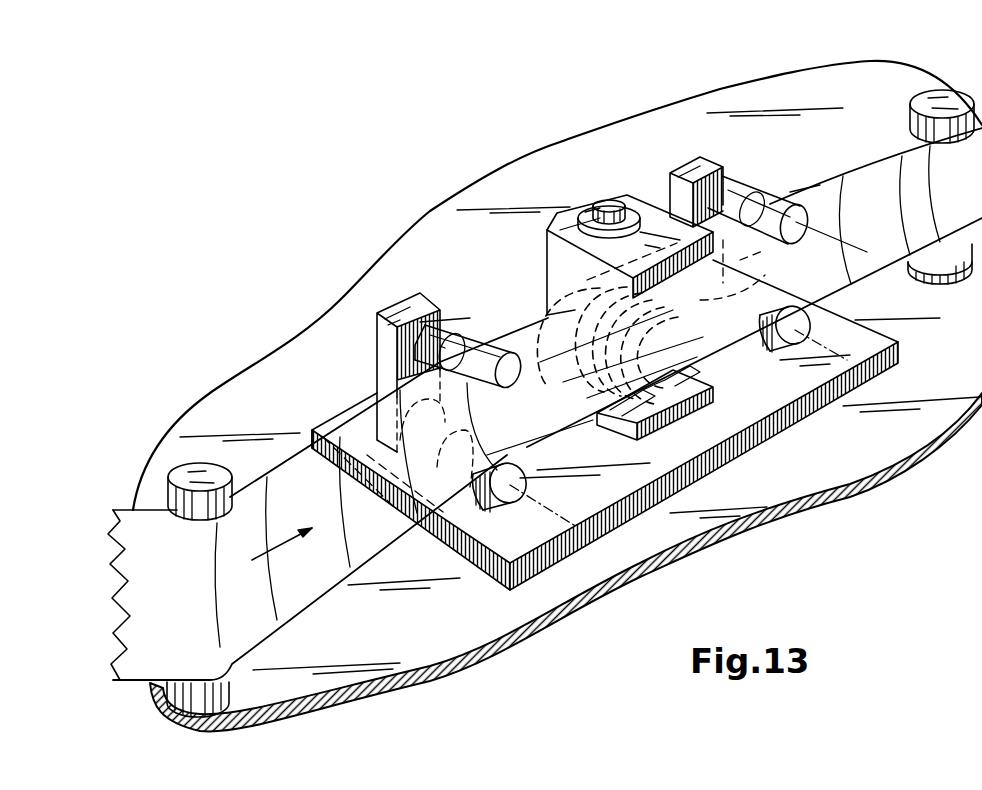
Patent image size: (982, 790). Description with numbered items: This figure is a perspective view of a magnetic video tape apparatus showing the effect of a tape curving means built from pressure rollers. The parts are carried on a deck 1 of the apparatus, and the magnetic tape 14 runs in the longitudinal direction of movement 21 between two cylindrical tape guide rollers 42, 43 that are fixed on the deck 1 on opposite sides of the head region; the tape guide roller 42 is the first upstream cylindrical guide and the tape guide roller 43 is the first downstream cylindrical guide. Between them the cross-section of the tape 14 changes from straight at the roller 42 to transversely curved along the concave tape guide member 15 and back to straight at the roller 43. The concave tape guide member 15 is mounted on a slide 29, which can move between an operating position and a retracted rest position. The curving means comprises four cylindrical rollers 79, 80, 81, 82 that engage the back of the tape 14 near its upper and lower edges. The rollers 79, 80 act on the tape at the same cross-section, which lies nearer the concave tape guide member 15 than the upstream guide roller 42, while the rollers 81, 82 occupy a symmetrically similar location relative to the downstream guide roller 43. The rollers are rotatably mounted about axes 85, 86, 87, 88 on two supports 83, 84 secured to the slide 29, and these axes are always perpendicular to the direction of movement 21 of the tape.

The deck 1 is at (795, 488).
The magnetic tape 14 is at (363, 540).
The concave tape guide member 15 is at (567, 237).
The direction of movement 21 is at (277, 548).
The slide 29 is at (697, 440).
The tape guide roller 42 is at (196, 476).
The tape guide roller 43 is at (925, 104).
The cylindrical roller 79 is at (470, 347).
The cylindrical roller 80 is at (478, 505).
The cylindrical roller 81 is at (763, 207).
The cylindrical roller 82 is at (773, 347).
The support 83 is at (410, 305).
The support 84 is at (687, 173).
The axis 85 is at (537, 377).
The axis 86 is at (540, 500).
The axis 87 is at (818, 230).
The axis 88 is at (823, 342).